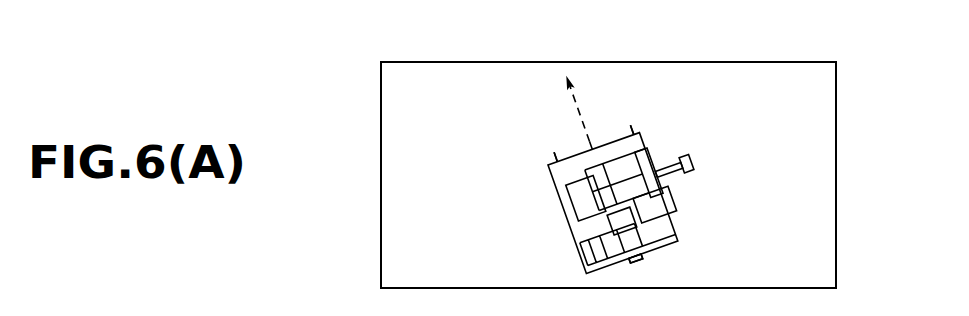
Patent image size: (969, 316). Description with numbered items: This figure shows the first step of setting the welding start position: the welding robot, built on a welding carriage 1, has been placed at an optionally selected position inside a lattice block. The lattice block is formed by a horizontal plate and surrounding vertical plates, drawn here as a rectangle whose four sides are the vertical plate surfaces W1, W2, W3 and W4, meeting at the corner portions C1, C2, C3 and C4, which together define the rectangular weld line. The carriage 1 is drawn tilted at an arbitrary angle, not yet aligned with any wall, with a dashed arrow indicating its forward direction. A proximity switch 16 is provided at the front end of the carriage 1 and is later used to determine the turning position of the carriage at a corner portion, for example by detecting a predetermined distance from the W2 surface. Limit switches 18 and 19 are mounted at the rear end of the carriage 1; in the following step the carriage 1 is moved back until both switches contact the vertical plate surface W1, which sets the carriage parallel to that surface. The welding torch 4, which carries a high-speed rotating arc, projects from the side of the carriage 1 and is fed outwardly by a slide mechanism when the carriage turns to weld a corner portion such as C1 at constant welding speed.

The welding carriage 1 is at (561, 201).
The welding torch 4 is at (684, 182).
The proximity switch 16 is at (641, 263).
The limit switch 18 is at (630, 125).
The limit switch 19 is at (554, 152).
The vertical plate surface W1 is at (643, 62).
The vertical plate surface W2 is at (873, 177).
The vertical plate surface W3 is at (775, 288).
The vertical plate surface W4 is at (381, 185).
The corner portion C1 is at (836, 62).
The corner portion C2 is at (836, 288).
The corner portion C3 is at (381, 288).
The corner portion C4 is at (381, 62).